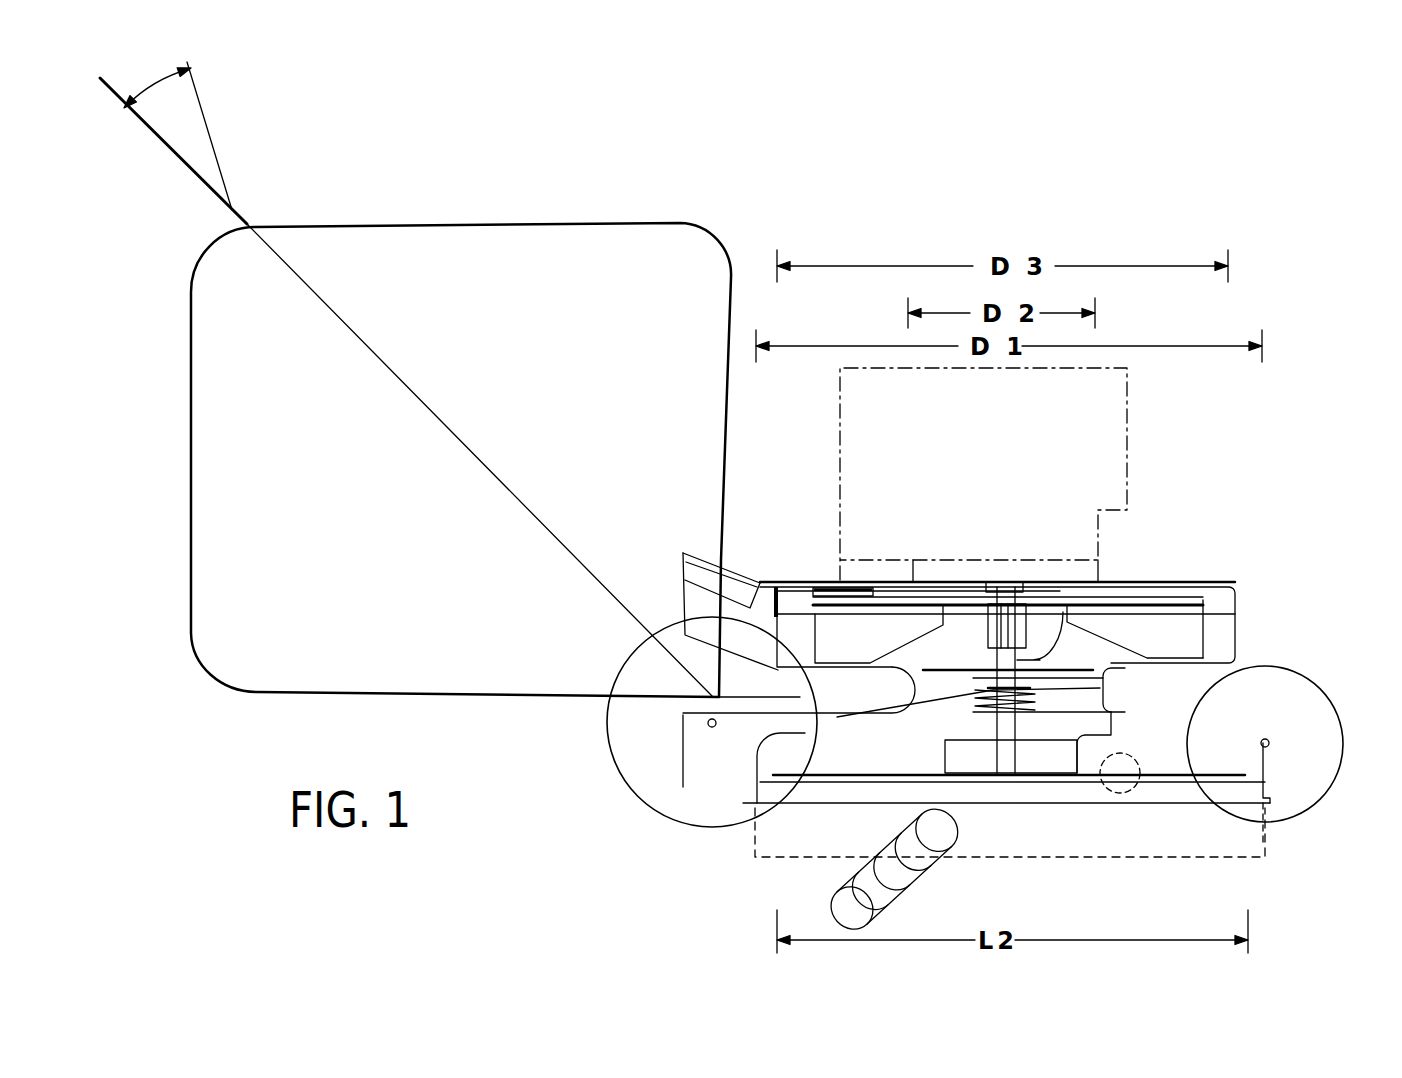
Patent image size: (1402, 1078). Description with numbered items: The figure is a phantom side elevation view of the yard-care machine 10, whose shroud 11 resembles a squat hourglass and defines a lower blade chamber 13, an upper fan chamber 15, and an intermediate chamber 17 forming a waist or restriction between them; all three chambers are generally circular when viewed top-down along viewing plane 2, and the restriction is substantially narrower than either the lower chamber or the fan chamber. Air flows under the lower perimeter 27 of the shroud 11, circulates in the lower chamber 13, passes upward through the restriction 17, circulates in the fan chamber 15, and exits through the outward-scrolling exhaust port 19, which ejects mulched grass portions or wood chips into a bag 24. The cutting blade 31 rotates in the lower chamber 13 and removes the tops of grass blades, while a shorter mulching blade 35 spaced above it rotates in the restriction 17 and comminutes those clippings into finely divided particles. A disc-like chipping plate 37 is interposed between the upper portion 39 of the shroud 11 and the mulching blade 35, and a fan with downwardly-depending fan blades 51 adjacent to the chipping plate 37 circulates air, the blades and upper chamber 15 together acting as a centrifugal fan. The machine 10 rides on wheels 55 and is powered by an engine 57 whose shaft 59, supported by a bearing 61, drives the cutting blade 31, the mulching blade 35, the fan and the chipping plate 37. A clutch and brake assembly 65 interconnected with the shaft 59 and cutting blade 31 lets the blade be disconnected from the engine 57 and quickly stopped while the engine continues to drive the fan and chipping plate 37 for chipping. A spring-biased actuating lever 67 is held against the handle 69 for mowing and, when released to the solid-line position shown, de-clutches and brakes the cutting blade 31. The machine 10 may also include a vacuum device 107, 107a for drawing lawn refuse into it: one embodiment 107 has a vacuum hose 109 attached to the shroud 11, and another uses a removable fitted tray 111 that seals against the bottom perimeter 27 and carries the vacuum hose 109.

The yard-care machine 10 is at (865, 237).
The shroud 11 is at (1236, 620).
The lower blade chamber 13 is at (1232, 740).
The upper fan chamber 15 is at (1222, 643).
The intermediate chamber 17 is at (1083, 697).
The exhaust port 19 is at (687, 598).
The bag 24 is at (478, 222).
The lower perimeter 27 is at (878, 805).
The cutting blade 31 is at (787, 778).
The mulching blade 35 is at (972, 670).
The chipping plate 37 is at (1152, 600).
The upper portion 39 is at (1123, 580).
The fan blades 51 is at (835, 633).
The wheels 55 is at (642, 652).
The engine 57 is at (1128, 425).
The shaft 59 is at (1062, 613).
The bearing 61 is at (912, 697).
The clutch and brake assembly 65 is at (945, 757).
The actuating lever 67 is at (208, 140).
The handle 69 is at (178, 162).
The vacuum device 107 is at (1147, 737).
The vacuum device 107a is at (747, 840).
The vacuum hose 109 is at (1117, 787).
The fitted tray 111 is at (1128, 857).
The viewing plane 2— 2 is at (590, 330).